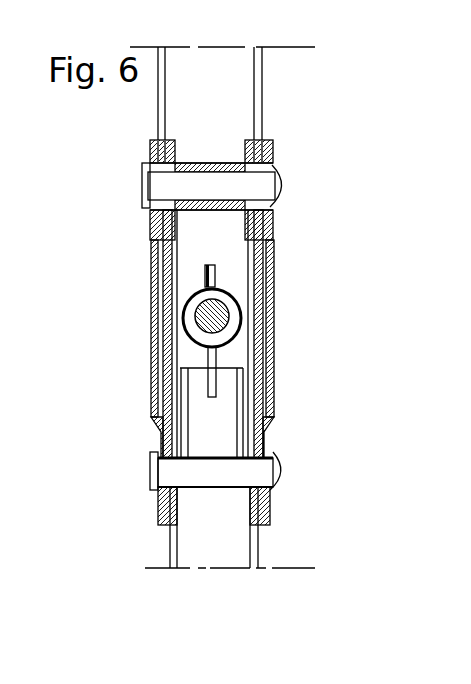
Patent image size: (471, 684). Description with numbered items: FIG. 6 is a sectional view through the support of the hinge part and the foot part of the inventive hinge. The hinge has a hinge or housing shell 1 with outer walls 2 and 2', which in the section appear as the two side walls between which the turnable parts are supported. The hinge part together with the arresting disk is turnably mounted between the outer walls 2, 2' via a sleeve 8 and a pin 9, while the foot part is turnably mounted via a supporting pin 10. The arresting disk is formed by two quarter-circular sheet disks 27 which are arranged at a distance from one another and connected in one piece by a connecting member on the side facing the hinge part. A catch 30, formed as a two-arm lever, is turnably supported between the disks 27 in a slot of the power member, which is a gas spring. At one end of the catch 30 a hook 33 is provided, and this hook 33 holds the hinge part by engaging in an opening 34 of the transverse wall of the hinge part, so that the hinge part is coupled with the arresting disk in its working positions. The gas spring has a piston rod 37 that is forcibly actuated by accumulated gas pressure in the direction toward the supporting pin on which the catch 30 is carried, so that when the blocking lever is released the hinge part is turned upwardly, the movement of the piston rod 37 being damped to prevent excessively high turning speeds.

The housing shell 1 is at (220, 334).
The outer wall 2 is at (132, 349).
The outer wall 2' is at (295, 349).
The sleeve 8 is at (189, 160).
The pin 9 is at (257, 190).
The supporting pin 10 is at (222, 465).
The circular sheet disk 27 is at (160, 312).
The catch 30 is at (230, 360).
The hook 33 is at (217, 265).
The opening 34 is at (229, 295).
The piston rod 37 is at (228, 315).